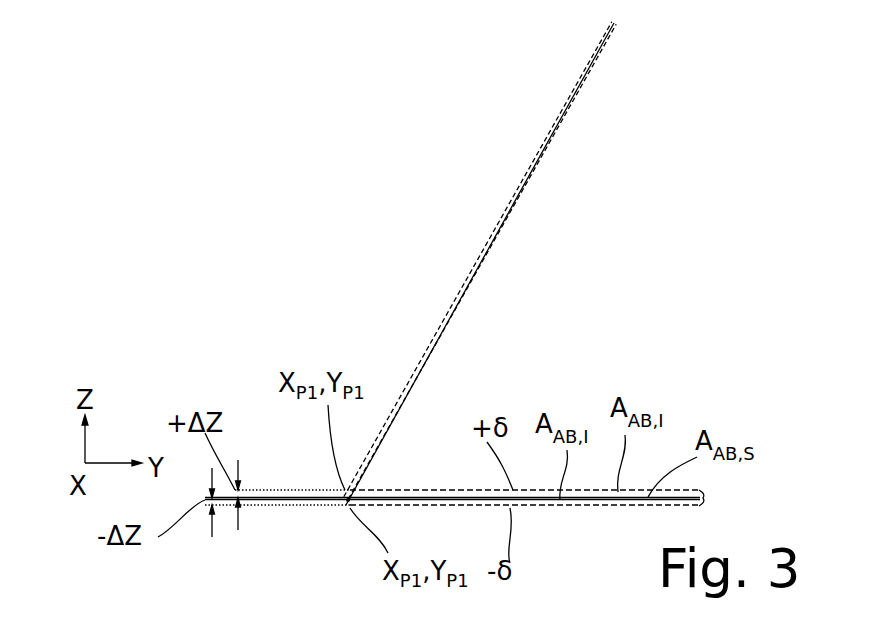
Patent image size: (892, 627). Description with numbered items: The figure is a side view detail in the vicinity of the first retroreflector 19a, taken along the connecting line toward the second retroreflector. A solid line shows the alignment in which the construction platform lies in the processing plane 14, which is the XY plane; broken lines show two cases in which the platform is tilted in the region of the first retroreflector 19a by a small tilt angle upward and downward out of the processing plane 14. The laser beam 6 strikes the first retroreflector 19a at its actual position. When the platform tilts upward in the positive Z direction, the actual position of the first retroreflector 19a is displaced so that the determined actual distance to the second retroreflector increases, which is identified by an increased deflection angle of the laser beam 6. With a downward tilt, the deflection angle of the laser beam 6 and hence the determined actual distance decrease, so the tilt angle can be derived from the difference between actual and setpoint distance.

The laser beam 6 is at (551, 134).
The processing plane 14 is at (278, 497).
The first retroreflector 19a is at (348, 502).